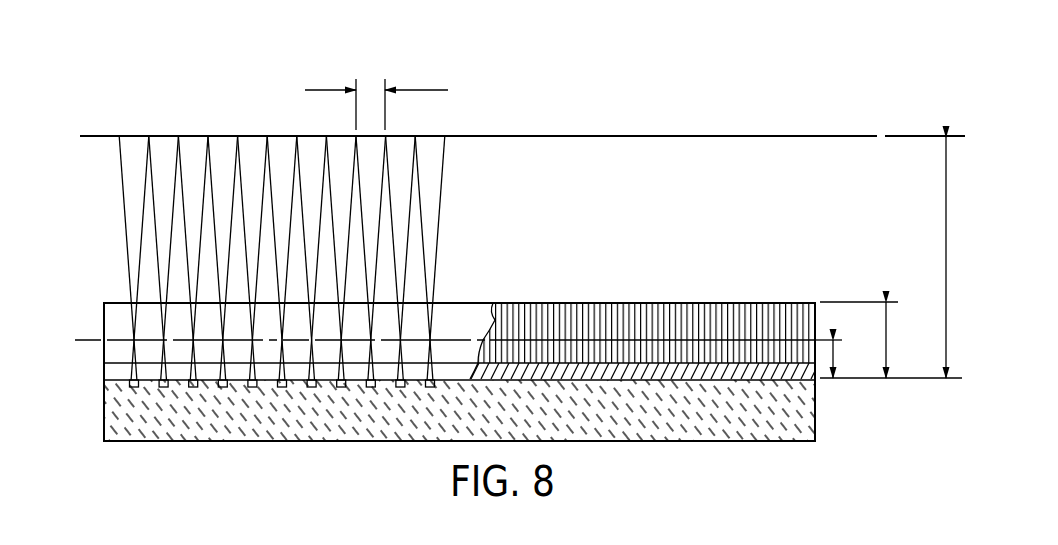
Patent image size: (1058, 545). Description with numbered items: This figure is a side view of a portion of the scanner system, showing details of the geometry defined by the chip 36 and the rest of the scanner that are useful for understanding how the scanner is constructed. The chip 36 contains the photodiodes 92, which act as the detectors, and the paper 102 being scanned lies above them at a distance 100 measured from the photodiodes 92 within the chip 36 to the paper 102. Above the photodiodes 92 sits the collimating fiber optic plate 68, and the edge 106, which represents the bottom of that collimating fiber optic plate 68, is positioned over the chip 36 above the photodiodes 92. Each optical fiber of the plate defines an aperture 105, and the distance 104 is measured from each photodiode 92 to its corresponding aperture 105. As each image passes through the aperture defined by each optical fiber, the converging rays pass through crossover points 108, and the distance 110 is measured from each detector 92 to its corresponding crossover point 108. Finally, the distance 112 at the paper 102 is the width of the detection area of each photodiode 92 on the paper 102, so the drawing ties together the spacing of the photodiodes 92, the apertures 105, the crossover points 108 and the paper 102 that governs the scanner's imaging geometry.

The chip 36 is at (173, 423).
The collimating fiber optic plate 68 is at (595, 304).
The photodiodes 92 is at (253, 388).
The distance 100 is at (946, 178).
The paper 102 is at (672, 138).
The distance 104 is at (886, 334).
The aperture 105 is at (133, 300).
The edge 106 is at (654, 370).
The crossover points 108 is at (132, 340).
The distance 110 is at (836, 355).
The distance 112 is at (410, 90).